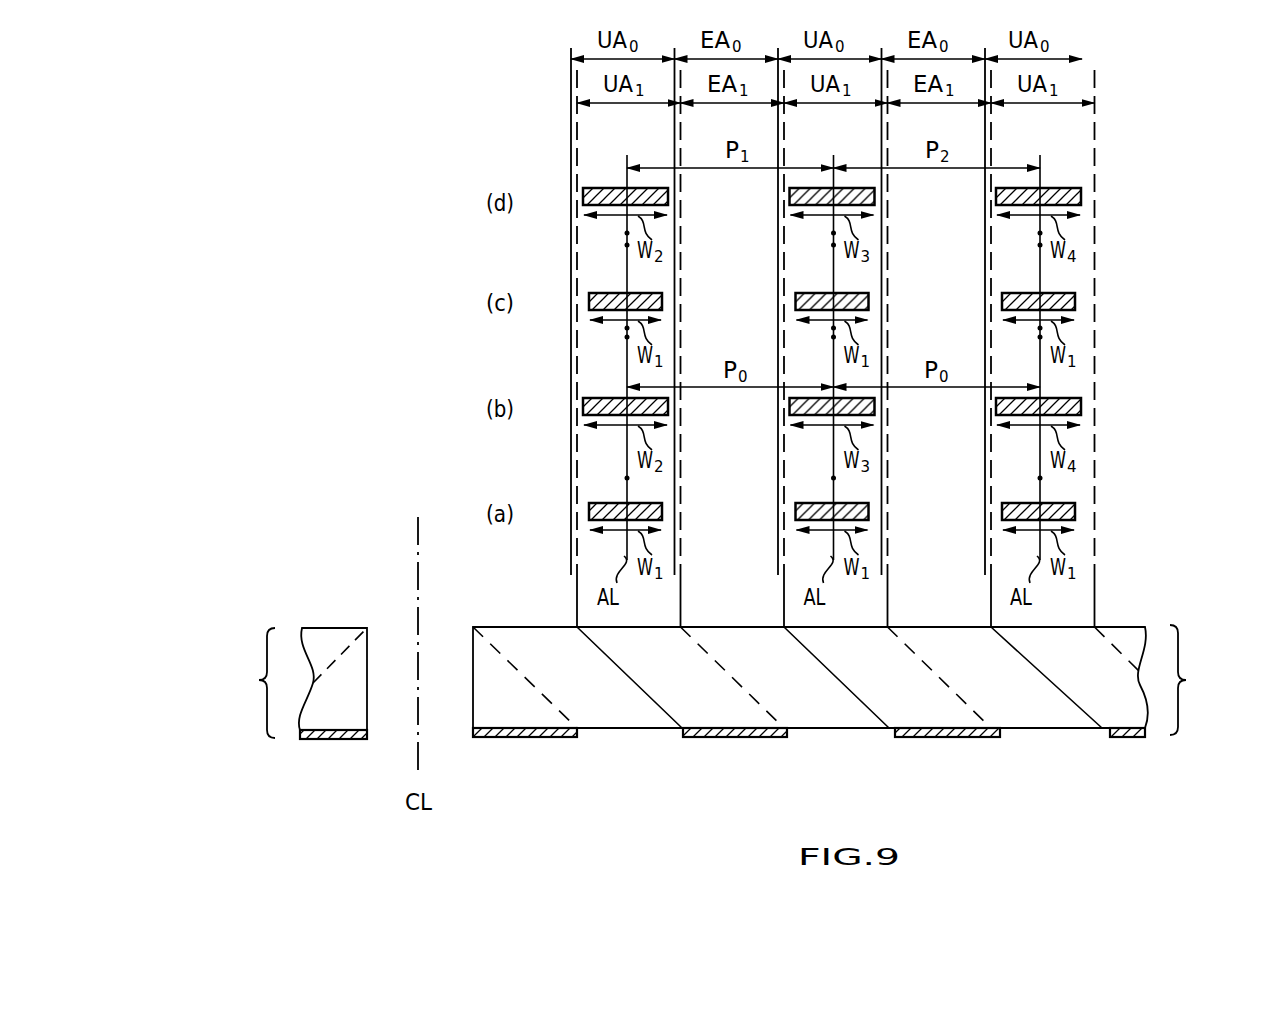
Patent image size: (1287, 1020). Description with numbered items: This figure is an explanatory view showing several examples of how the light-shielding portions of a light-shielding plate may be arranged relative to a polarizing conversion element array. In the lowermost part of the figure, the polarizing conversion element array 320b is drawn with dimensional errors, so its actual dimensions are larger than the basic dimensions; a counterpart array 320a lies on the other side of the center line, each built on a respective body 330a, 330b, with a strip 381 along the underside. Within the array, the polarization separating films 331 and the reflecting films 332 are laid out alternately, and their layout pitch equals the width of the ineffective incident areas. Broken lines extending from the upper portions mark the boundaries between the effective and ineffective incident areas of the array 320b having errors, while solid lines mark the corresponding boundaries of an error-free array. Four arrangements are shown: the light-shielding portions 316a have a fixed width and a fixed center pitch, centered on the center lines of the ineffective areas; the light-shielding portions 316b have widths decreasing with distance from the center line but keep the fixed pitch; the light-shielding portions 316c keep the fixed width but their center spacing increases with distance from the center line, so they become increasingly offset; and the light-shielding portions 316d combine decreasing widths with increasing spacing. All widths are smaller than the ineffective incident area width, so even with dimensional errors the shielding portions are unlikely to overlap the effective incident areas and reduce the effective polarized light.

The light-shielding portions 316a is at (607, 502).
The light-shielding portions 316b is at (603, 397).
The light-shielding portions 316c is at (610, 292).
The light-shielding portions 316d is at (606, 187).
The left substrate portion 330a is at (334, 628).
The right substrate portion 330b is at (497, 627).
The left unit 320a is at (260, 681).
The polarizing conversion element array 320b is at (1190, 680).
The polarization separating films 331 is at (747, 688).
The reflecting films 332 is at (849, 687).
The bottom electrode strip 381 is at (966, 740).